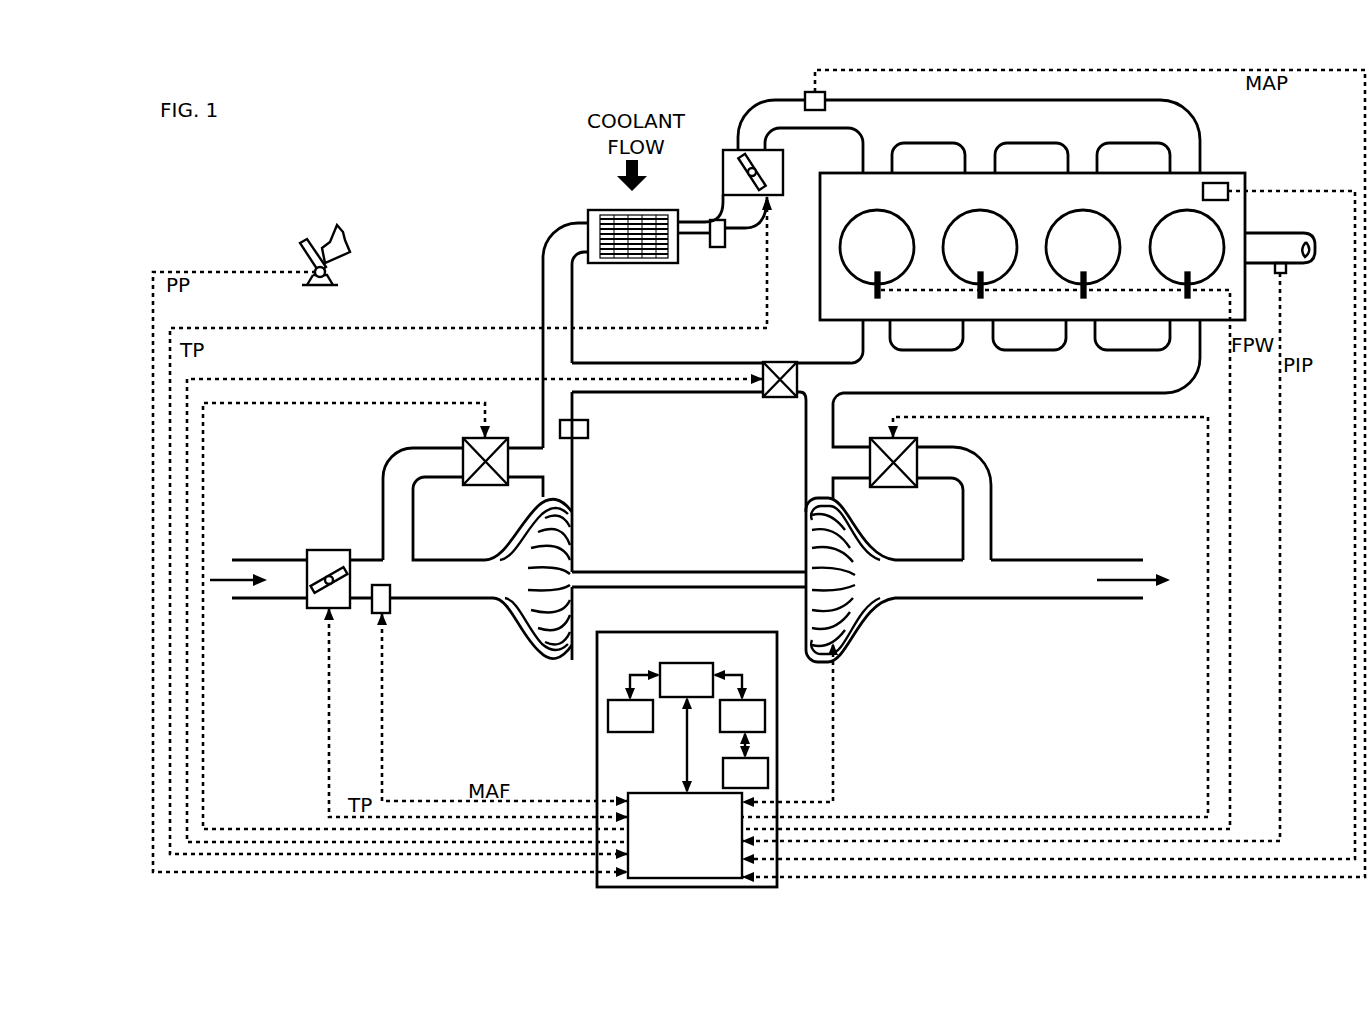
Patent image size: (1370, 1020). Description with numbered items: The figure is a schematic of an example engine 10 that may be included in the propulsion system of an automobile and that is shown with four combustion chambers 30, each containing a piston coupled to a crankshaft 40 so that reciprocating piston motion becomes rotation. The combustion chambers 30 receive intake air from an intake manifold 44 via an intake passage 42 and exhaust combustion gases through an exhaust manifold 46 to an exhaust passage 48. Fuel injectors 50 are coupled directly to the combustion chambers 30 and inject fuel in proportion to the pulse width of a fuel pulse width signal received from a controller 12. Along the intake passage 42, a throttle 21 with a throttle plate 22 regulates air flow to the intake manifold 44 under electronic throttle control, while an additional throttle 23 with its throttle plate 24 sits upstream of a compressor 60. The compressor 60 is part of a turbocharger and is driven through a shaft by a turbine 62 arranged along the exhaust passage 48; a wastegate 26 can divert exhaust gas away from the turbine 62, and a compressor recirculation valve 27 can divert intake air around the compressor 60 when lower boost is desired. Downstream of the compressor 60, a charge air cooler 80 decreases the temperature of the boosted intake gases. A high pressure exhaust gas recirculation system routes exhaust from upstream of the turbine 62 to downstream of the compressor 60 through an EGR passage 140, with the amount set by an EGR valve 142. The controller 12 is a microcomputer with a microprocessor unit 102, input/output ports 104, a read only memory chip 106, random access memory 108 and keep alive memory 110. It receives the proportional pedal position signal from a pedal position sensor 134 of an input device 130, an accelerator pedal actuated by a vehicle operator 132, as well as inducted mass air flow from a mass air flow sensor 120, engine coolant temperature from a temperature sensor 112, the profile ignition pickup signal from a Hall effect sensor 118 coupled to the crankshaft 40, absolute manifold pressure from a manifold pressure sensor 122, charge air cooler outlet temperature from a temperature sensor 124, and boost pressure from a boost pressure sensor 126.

The engine 10 is at (1032, 246).
The controller 12 is at (675, 759).
The throttle 21 is at (738, 150).
The throttle plate 22 is at (769, 184).
The additional throttle 23 is at (325, 550).
The throttle plate 24 is at (336, 568).
The wastegate 26 is at (918, 451).
The compressor recirculation valve 27 is at (463, 450).
The combustion chamber 30 is at (1032, 247).
The crankshaft 40 is at (1285, 233).
The intake passage 42 is at (351, 579).
The intake manifold 44 is at (969, 136).
The exhaust manifold 46 is at (998, 485).
The exhaust passage 48 is at (1032, 579).
The fuel injector 50 is at (875, 296).
The compressor 60 is at (530, 622).
The turbine 62 is at (852, 531).
The charge air cooler 80 is at (590, 210).
The microprocessor unit 102 is at (660, 668).
The input/output ports 104 is at (685, 835).
The read only memory chip 106 is at (608, 727).
The random access memory 108 is at (765, 700).
The keep alive memory 110 is at (768, 758).
The temperature sensor 112 is at (1210, 183).
The Hall effect sensor 118 is at (1284, 273).
The mass air flow sensor 120 is at (390, 600).
The manifold pressure sensor 122 is at (806, 93).
The temperature sensor 124 is at (717, 247).
The boost pressure sensor 126 is at (590, 428).
The input device 130 is at (303, 255).
The vehicle operator 132 is at (346, 240).
The pedal position sensor 134 is at (328, 272).
The EGR passage 140 is at (670, 365).
The EGR valve 142 is at (779, 362).